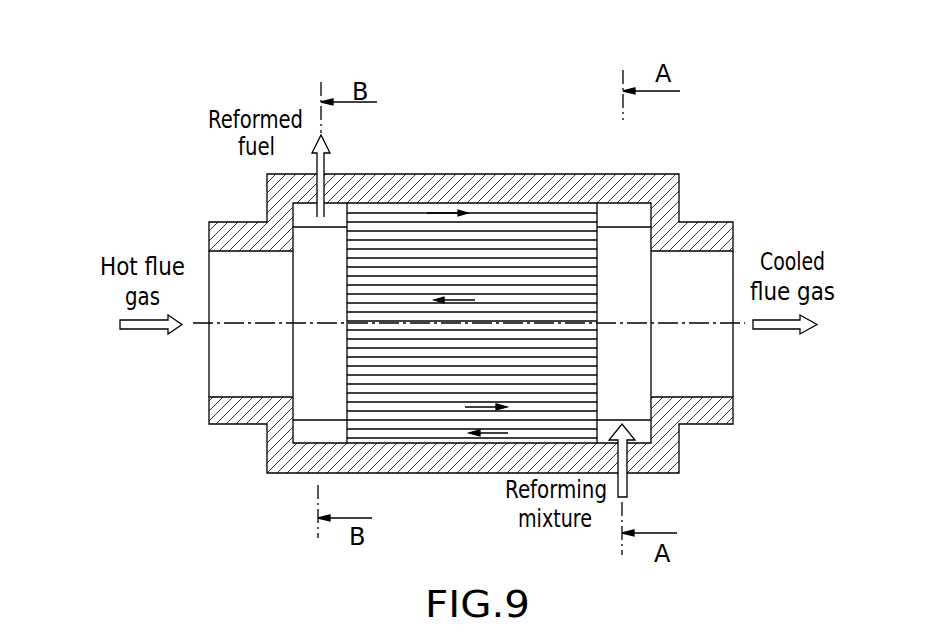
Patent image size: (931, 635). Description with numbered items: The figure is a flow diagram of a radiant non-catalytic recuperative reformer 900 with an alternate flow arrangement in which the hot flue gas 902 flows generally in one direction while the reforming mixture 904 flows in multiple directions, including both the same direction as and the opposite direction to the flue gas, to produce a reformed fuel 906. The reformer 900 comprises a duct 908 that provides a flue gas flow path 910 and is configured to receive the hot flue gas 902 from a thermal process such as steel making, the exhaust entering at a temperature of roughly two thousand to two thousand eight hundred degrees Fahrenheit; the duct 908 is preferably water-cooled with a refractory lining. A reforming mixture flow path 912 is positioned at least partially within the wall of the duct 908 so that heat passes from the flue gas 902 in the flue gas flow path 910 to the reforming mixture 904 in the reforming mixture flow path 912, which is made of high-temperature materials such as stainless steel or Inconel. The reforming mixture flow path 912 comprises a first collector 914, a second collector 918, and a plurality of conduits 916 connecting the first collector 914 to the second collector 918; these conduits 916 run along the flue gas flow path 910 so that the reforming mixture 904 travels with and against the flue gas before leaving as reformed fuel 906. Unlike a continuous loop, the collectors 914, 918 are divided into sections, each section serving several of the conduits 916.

The radiant non-catalytic recuperative reformer 900 is at (713, 103).
The hot flue gas 902 is at (132, 330).
The reforming mixture 904 is at (627, 482).
The reformed fuel 906 is at (328, 157).
The duct 908 is at (437, 185).
The flue gas flow path 910 is at (252, 365).
The reforming mixture flow path 912 is at (475, 407).
The first collector 914 is at (623, 213).
The conduits 916 is at (510, 263).
The second collector 918 is at (315, 432).